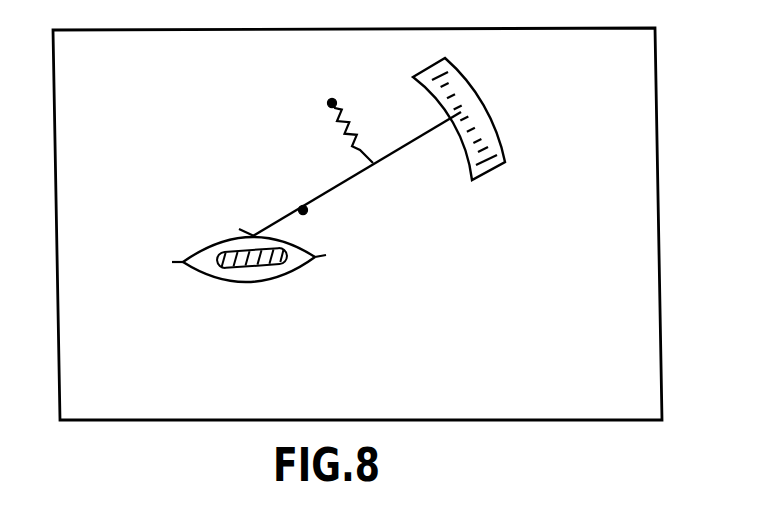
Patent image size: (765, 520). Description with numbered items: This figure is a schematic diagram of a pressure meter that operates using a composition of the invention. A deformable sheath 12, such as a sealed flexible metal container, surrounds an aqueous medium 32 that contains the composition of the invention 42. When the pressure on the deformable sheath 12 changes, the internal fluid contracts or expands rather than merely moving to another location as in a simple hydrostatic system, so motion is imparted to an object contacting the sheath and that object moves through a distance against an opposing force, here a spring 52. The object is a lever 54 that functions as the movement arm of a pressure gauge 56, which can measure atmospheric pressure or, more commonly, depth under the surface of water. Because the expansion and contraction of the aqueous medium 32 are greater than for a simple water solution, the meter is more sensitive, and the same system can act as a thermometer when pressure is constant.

The deformable sheath 12 is at (287, 274).
The aqueous medium 32 is at (210, 268).
The composition of the invention 42 is at (259, 262).
The spring 52 is at (337, 131).
The lever 54 is at (365, 169).
The pressure gauge 56 is at (658, 123).